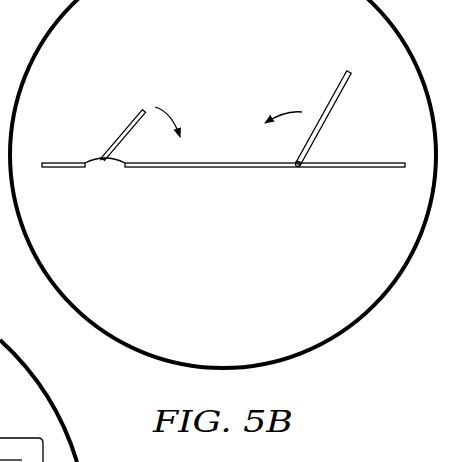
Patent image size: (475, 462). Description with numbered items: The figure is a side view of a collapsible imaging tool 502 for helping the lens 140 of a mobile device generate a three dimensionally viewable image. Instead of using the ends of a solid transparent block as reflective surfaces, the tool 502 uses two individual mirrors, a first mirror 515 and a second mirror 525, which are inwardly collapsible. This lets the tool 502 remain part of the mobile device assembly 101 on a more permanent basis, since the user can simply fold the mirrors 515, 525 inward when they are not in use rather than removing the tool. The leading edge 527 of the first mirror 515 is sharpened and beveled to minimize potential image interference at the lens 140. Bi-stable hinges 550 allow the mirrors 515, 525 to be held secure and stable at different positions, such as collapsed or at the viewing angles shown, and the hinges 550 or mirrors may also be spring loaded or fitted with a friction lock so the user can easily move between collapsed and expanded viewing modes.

The mobile device assembly 101 is at (218, 208).
The lens 140 is at (108, 168).
The leading edge 527 is at (102, 157).
The first mirror 515 is at (118, 120).
The collapsible imaging tool 502 is at (218, 110).
The second mirror 525 is at (328, 87).
The bi-stable hinge 550 is at (299, 167).